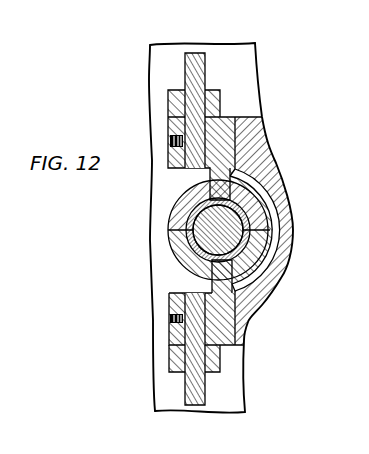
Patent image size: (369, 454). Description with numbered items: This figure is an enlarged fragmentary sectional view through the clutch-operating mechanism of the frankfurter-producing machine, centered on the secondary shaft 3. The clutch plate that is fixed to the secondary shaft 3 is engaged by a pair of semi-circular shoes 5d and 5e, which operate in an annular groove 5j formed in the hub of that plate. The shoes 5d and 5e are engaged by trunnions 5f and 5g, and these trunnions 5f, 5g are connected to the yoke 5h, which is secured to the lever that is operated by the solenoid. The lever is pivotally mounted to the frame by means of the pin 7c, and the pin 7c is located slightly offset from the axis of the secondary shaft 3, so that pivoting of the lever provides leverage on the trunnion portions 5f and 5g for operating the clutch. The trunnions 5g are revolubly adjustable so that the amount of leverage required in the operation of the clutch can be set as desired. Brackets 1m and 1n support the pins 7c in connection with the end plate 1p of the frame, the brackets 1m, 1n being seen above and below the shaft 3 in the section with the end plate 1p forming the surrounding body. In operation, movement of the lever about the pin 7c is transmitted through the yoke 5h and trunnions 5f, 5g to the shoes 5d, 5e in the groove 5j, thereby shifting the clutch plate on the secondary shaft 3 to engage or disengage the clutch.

The end plate 1p is at (233, 58).
The bracket 1m is at (177, 100).
The bracket 1n is at (172, 355).
The pin 7c is at (188, 66).
The trunnion 5f is at (222, 137).
The trunnion 5g is at (227, 329).
The yoke 5h is at (270, 181).
The annular groove 5j is at (263, 203).
The semi-circular shoe 5d is at (187, 207).
The semi-circular shoe 5e is at (182, 250).
The secondary shaft 3 is at (268, 245).